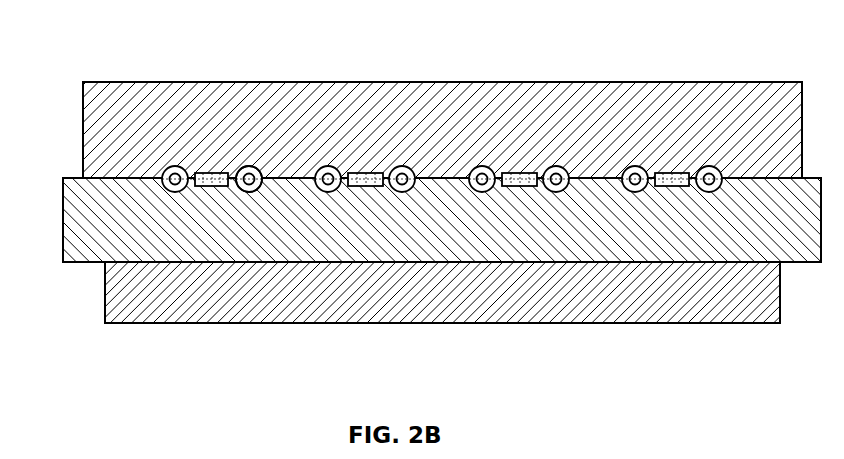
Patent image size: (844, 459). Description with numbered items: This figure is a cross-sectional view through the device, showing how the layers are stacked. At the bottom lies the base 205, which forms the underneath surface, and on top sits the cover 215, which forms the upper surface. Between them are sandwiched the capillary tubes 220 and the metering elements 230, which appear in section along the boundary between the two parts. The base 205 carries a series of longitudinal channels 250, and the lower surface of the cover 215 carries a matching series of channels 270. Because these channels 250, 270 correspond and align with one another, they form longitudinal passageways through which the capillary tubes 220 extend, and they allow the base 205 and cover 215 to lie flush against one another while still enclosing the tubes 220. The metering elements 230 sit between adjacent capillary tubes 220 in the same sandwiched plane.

The base 205 is at (115, 297).
The cover 215 is at (97, 123).
The capillary tube 220 is at (175, 192).
The metering element 230 is at (213, 172).
The channel 250 is at (249, 192).
The channel 270 is at (250, 165).